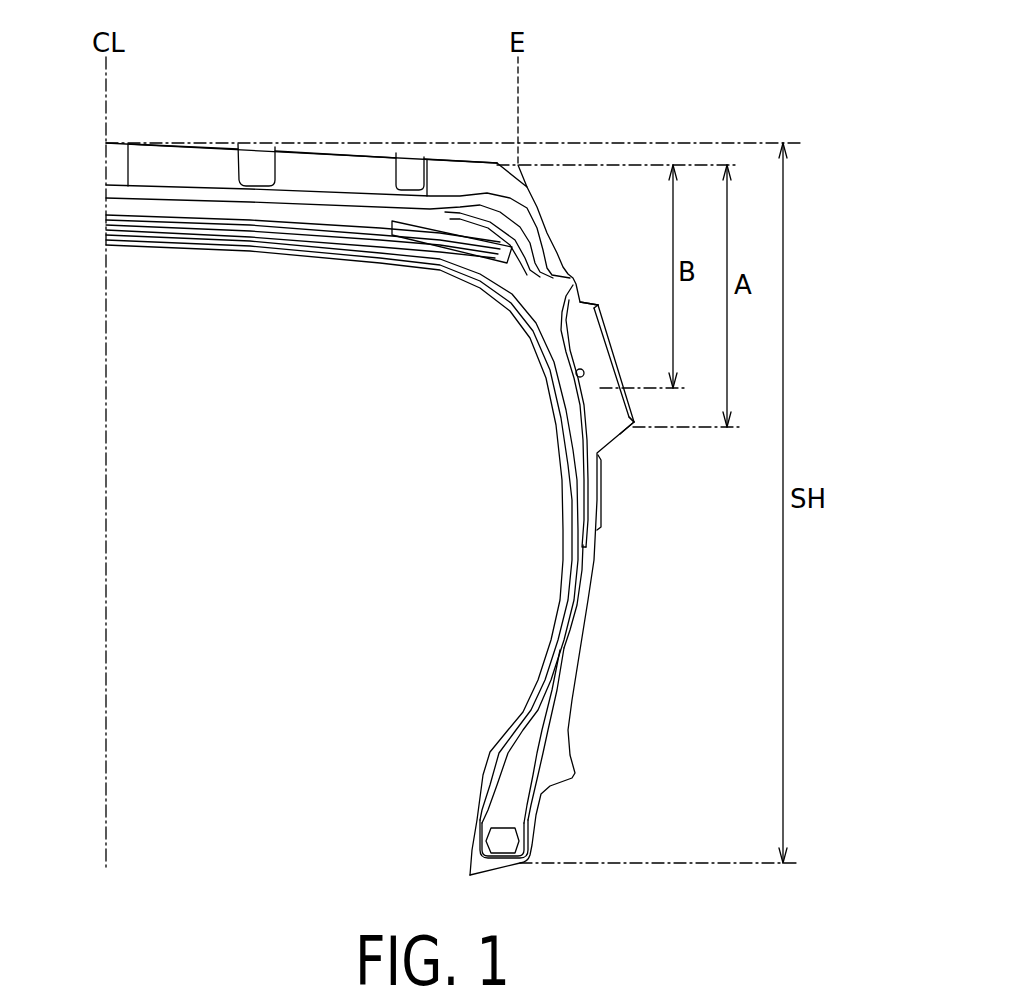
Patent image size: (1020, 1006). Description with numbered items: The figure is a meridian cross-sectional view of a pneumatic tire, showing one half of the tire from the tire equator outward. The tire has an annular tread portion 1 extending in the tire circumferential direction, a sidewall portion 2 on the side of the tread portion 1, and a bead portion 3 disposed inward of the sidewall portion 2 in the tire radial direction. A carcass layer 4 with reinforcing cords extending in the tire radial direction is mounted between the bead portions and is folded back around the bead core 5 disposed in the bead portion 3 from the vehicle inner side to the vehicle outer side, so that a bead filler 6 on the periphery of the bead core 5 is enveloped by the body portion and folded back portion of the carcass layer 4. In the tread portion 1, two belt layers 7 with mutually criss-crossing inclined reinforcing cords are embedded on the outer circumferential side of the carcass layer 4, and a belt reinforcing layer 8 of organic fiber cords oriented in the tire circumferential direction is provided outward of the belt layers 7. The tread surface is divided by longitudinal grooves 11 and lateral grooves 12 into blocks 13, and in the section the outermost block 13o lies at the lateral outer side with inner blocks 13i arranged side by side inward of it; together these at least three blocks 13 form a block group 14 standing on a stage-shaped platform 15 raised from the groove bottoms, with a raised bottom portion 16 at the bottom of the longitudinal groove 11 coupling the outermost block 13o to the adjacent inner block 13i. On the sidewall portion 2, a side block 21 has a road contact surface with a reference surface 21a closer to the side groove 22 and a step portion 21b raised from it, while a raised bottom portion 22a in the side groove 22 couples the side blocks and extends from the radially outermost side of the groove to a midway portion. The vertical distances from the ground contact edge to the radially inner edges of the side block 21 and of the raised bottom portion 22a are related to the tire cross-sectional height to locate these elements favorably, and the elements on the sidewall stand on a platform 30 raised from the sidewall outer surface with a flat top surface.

The tread portion 1 is at (143, 92).
The sidewall portion 2 is at (610, 548).
The bead portion 3 is at (542, 845).
The carcass layer 4 is at (510, 297).
The bead core 5 is at (502, 842).
The bead filler 6 is at (510, 779).
The belt layer 7 is at (248, 232).
The belt reinforcing layer 8 is at (402, 223).
The longitudinal groove 11 is at (115, 143).
The lateral groove 12 is at (535, 204).
The block 13 is at (178, 143).
The inner block 13i is at (262, 151).
The outermost block 13o is at (460, 161).
The block group 14 is at (504, 72).
The platform 15 is at (165, 196).
The raised bottom portion 16 is at (422, 163).
The side block 21 is at (633, 372).
The reference surface 21a is at (640, 426).
The step portion 21b is at (607, 320).
The side groove 22 is at (577, 376).
The raised bottom portion 22a is at (601, 337).
The platform 30 is at (600, 498).